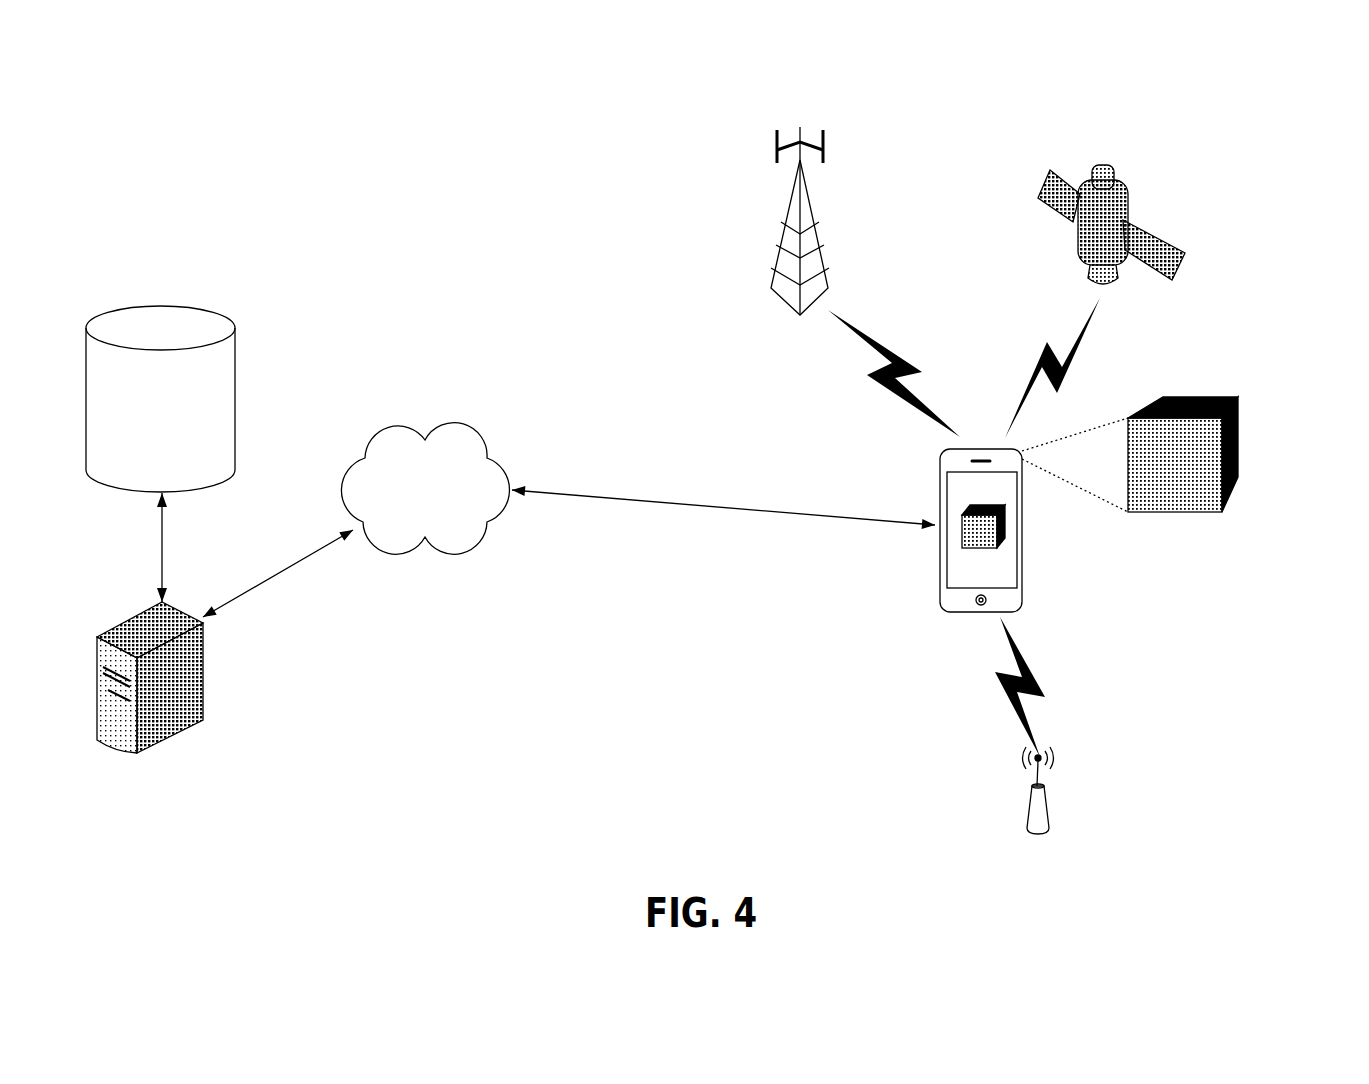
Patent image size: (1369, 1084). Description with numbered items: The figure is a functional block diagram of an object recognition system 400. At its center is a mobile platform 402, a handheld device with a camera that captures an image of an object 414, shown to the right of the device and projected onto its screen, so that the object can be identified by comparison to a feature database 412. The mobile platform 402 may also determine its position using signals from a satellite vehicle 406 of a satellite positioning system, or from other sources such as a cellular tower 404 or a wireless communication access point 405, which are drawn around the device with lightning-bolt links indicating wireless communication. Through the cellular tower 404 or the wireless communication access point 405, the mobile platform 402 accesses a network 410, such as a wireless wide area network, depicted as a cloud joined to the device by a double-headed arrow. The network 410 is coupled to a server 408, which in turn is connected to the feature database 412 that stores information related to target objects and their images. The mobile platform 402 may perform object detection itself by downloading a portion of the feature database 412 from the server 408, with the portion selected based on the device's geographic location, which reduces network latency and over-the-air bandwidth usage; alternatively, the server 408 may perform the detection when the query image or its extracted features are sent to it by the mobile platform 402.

The object recognition system 400 is at (1300, 125).
The mobile platform 402 is at (937, 577).
The cellular tower 404 is at (796, 314).
The wireless communication access point 405 is at (1047, 800).
The satellite vehicle 406 is at (1080, 250).
The server 408 is at (113, 628).
The network 410 is at (410, 519).
The feature database 412 is at (160, 322).
The object 414 is at (1203, 493).